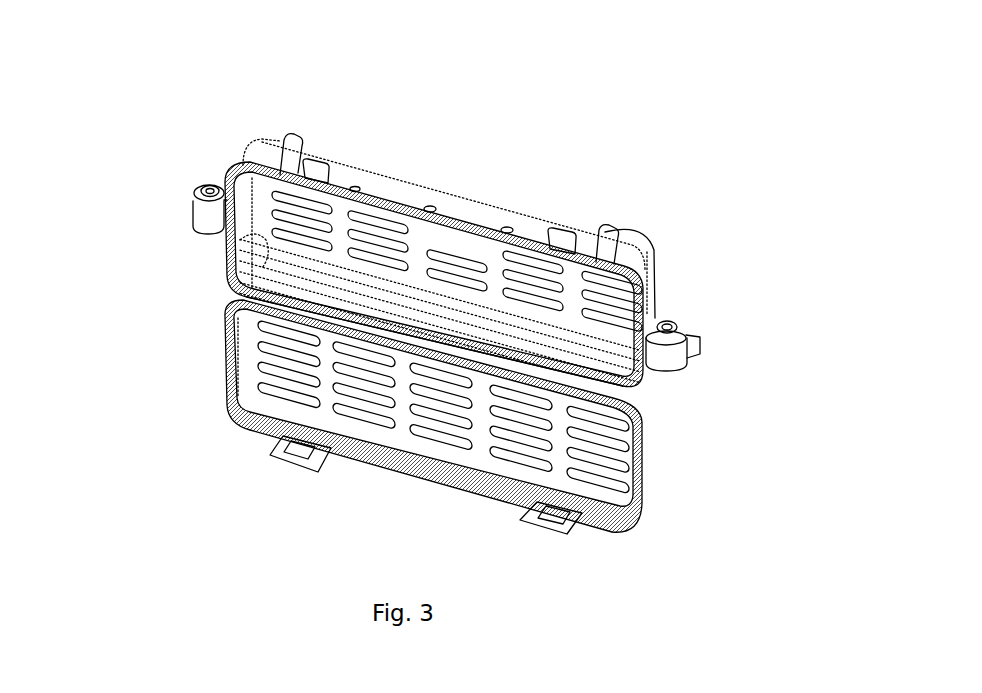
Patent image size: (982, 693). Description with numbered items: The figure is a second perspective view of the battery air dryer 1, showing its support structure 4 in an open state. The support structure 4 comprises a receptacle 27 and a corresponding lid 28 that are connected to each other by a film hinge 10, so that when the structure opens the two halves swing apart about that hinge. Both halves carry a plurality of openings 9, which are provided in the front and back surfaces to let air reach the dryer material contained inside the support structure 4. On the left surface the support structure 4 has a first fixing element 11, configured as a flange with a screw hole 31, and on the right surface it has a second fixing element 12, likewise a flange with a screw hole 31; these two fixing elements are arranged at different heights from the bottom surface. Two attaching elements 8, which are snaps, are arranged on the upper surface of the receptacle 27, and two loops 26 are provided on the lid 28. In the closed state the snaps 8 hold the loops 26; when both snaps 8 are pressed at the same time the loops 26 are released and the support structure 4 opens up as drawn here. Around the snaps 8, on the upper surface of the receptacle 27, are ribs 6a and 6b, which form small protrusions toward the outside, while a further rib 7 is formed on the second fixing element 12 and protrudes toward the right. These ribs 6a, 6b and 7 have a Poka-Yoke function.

The battery air dryer 1 is at (611, 603).
The support structure 4 is at (653, 129).
The rib 6a is at (278, 131).
The rib 6b is at (607, 237).
The rib 7 is at (690, 347).
The attaching element 8 is at (314, 172).
The openings 9 is at (262, 358).
The film hinge 10 is at (288, 290).
The first fixing element 11 is at (197, 203).
The second fixing element 12 is at (676, 356).
The loops 26 is at (323, 464).
The receptacle 27 is at (654, 241).
The lid 28 is at (650, 476).
The screw hole 31 is at (212, 186).